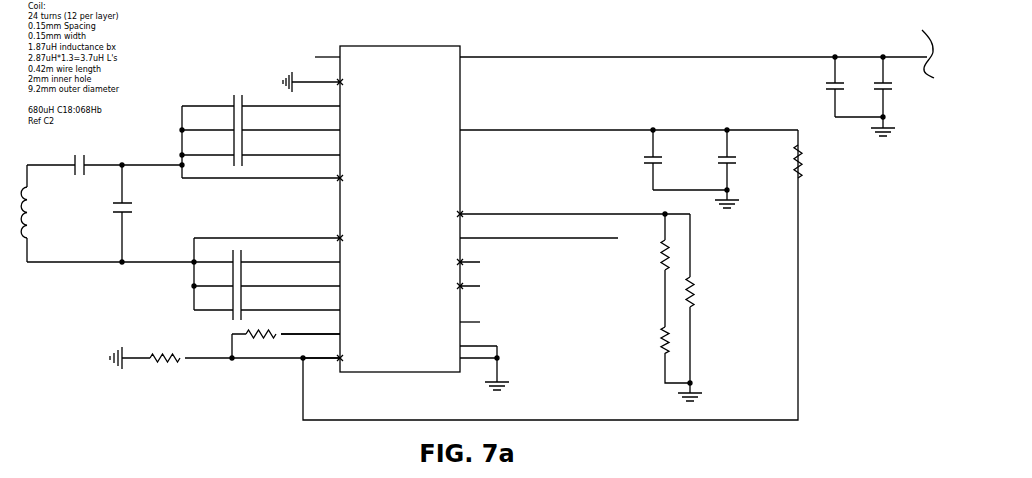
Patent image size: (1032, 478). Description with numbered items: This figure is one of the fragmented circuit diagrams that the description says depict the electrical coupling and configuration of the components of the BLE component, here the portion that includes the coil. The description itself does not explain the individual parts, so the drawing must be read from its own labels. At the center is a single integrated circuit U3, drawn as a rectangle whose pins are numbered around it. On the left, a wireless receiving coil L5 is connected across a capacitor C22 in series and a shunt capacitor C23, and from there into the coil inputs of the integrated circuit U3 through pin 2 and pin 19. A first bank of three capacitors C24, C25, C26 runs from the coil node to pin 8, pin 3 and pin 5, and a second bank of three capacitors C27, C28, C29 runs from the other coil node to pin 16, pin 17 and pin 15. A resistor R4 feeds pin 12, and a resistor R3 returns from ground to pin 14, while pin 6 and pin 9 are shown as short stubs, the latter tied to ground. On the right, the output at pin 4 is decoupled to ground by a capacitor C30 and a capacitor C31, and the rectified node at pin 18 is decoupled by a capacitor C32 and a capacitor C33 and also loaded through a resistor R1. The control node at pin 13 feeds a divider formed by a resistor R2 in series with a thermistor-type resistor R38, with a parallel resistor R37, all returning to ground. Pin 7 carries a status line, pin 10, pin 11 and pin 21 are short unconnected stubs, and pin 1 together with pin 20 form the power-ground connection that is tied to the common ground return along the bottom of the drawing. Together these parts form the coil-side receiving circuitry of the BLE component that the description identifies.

The wireless power receiver IC BQ51013BRHLR U3 is at (400, 216).
The wireless receiver coil L5 is at (42, 213).
The capacitor 10nF C22 is at (104, 169).
The capacitor 700nF C23 is at (124, 213).
The capacitor 47nF C24 is at (223, 106).
The capacitor 10nF C25 is at (222, 130).
The capacitor 0.47uF C26 is at (226, 154).
The capacitor 0.47uF C27 is at (232, 262).
The capacitor 10nF C28 is at (228, 286).
The capacitor 47nF C29 is at (229, 309).
The capacitor 100nF C30 is at (854, 86).
The capacitor 10uF C31 is at (893, 95).
The capacitor 100nF C32 is at (685, 159).
The capacitor 10uF/16V C33 is at (747, 168).
The resistor 20K R1 is at (814, 160).
The resistor 3.9K R2 is at (649, 269).
The resistor 200 R3 is at (225, 358).
The resistor 300 R4 is at (285, 341).
The resistor 68K R37 is at (702, 307).
The NTC thermistor 10K R38 is at (624, 355).
The PGND pin 1 is at (478, 341).
The AC1 pin 2 is at (262, 174).
The BOOT1 pin 3 is at (291, 124).
The OUT pin 4 is at (693, 51).
The CLAMP1 pin 5 is at (291, 149).
The AD-EN pin 6 is at (327, 51).
The CHG pin 7 is at (539, 233).
The COMM1 pin 8 is at (291, 100).
The AD pin 9 is at (313, 81).
The EN1 pin 10 is at (468, 258).
The EN2 pin 11 is at (468, 282).
The ILIM pin 12 is at (310, 328).
The TS/CTRL pin 13 is at (573, 210).
The FOD pin 14 is at (323, 354).
The COMM2 pin 15 is at (290, 304).
The CLAMP2 pin 16 is at (290, 256).
The BOOT2 pin 17 is at (290, 280).
The RECT pin 18 is at (629, 124).
The AC2 pin 19 is at (268, 234).
The PGND pin 20 is at (484, 368).
The EXP pin 21 is at (470, 316).